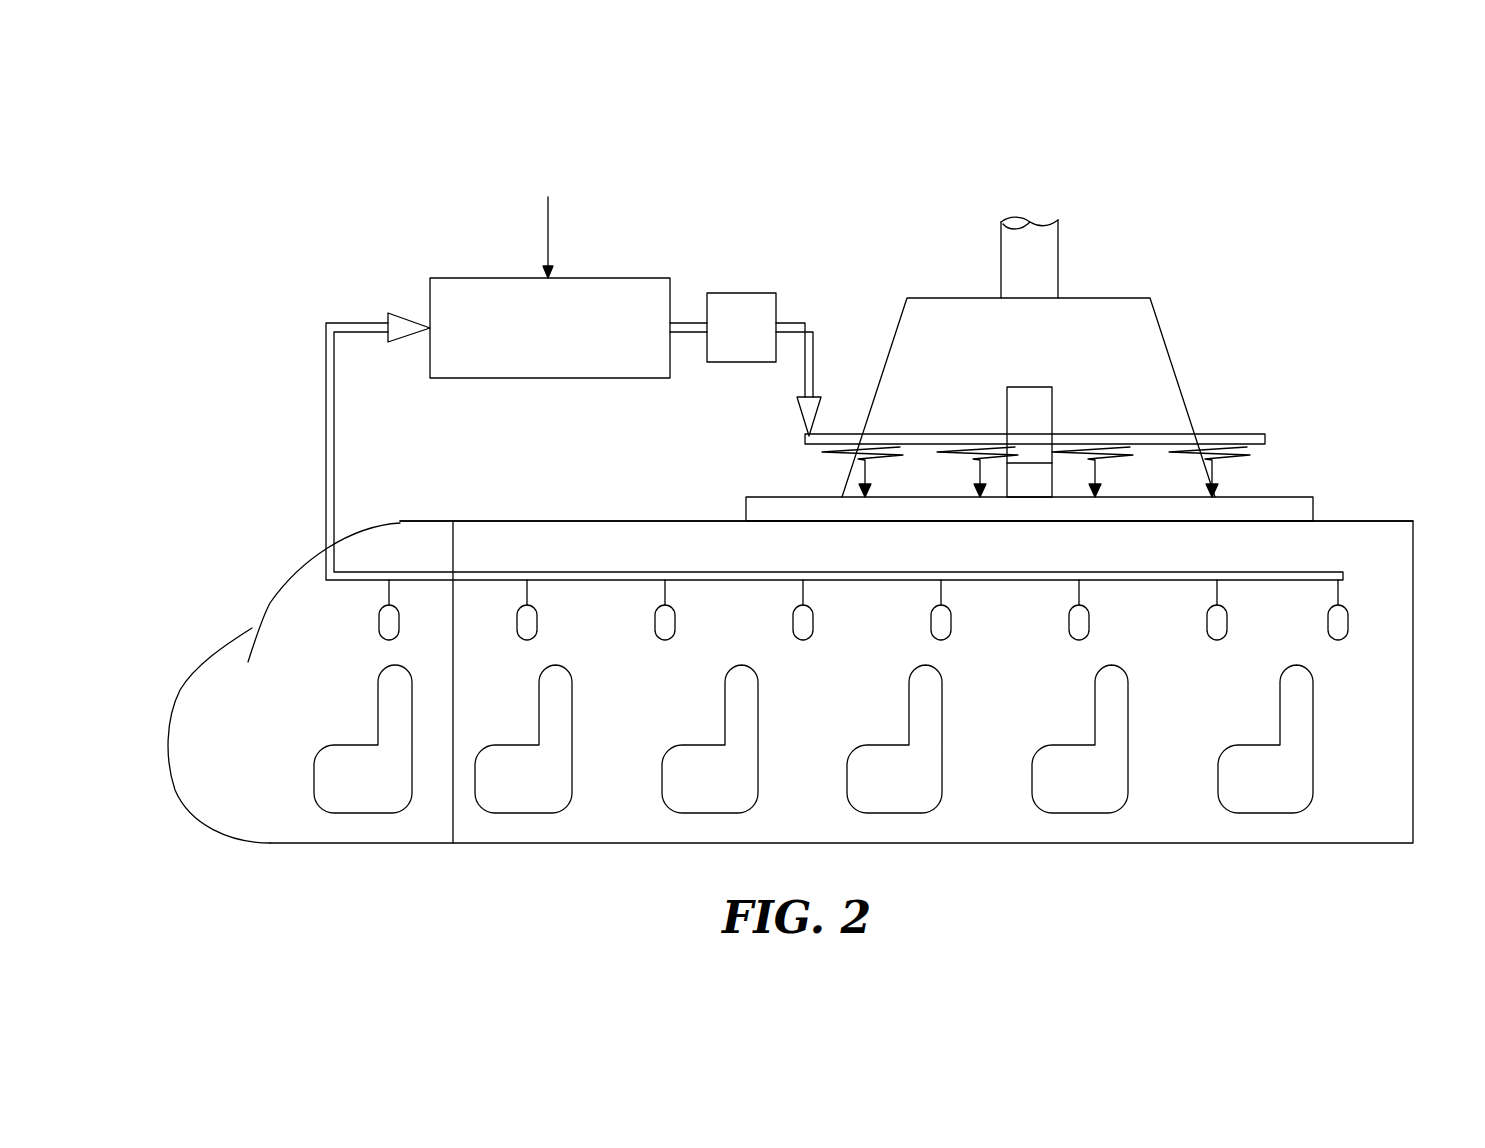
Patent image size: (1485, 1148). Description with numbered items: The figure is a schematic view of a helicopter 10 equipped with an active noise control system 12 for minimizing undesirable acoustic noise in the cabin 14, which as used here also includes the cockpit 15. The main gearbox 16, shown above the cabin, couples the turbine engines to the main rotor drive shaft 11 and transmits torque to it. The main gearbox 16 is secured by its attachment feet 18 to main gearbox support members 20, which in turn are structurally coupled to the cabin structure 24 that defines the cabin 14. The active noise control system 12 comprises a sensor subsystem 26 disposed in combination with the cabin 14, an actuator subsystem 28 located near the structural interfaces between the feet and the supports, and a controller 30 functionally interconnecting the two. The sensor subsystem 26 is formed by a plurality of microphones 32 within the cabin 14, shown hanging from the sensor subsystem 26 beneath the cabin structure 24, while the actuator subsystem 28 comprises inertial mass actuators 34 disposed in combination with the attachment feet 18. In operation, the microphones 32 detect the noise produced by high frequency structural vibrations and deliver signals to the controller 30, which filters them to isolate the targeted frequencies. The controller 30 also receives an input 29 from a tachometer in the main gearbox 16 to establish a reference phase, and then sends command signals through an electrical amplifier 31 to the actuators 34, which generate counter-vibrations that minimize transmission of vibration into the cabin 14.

The helicopter 10 is at (1418, 424).
The main rotor drive shaft 11 is at (1058, 242).
The active noise control system 12 is at (430, 194).
The cabin 14 is at (1355, 823).
The cockpit 15 is at (293, 640).
The main gearbox 16 is at (1118, 312).
The attachment feet 18 is at (1035, 477).
The main gearbox support members 20 is at (764, 508).
The cabin structure 24 is at (540, 520).
The sensor subsystem 26 is at (1327, 565).
The actuator subsystem 28 is at (1218, 433).
The input 29 is at (548, 222).
The controller 30 is at (566, 346).
The electrical amplifier 31 is at (759, 343).
The microphones 32 is at (1338, 632).
The inertial mass actuators 34 is at (1227, 458).